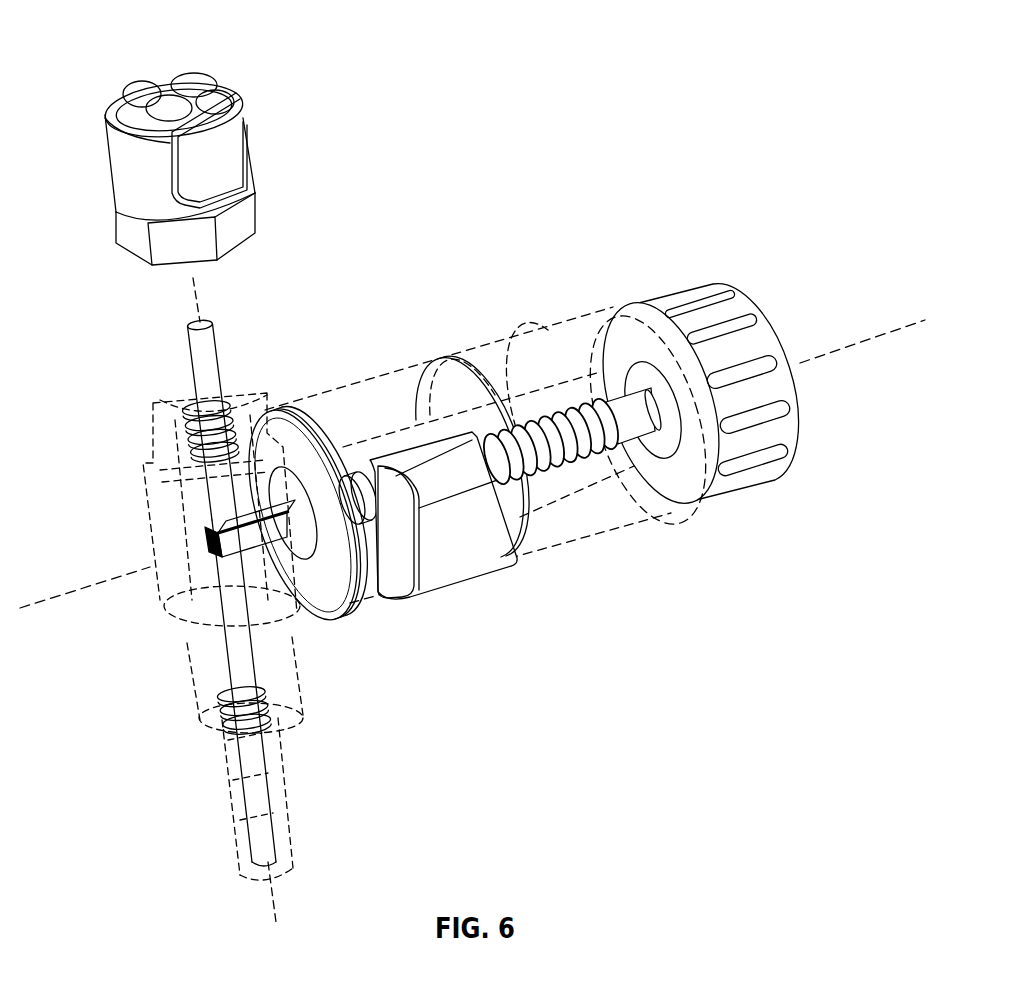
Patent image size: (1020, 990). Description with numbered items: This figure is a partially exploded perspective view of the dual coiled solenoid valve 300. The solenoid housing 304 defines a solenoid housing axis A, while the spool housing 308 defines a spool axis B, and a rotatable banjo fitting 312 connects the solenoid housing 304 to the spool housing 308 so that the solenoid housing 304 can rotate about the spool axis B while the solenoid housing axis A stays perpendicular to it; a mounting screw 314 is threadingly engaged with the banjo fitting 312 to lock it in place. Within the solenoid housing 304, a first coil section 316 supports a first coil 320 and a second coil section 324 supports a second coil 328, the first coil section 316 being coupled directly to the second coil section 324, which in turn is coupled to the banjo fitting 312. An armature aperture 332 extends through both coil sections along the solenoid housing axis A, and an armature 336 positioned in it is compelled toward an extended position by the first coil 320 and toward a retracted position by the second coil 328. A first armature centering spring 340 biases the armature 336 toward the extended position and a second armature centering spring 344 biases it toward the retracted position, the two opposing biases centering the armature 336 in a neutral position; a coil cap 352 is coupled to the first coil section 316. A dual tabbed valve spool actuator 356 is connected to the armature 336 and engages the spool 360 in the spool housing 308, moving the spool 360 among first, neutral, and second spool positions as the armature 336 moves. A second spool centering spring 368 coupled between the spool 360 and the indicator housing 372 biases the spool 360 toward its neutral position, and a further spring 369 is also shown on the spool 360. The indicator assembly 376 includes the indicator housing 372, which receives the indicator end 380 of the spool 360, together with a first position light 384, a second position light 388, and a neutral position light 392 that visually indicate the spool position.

The duel coiled solenoid valve 300 is at (480, 203).
The solenoid housing 304 is at (525, 303).
The spool housing 308 is at (233, 777).
The banjo fitting 312 is at (165, 597).
The mounting screw 314 is at (157, 460).
The first coil section 316 is at (583, 333).
The first coil 320 is at (520, 353).
The second coil section 324 is at (380, 382).
The second coil 328 is at (453, 557).
The armature aperture 332 is at (350, 598).
The armature 336 is at (322, 560).
The first armature centering spring 340 is at (590, 460).
The second armature centering spring 344 is at (308, 503).
The coil cap 352 is at (748, 312).
The dual tabbed valve spool actuator 356 is at (207, 533).
The spool 360 is at (247, 813).
The second spool centering spring 368 is at (187, 406).
The lower seal rings 369 is at (223, 717).
The indicator housing 372 is at (243, 213).
The indicator assembly 376 is at (215, 148).
The indicator end 380 is at (200, 342).
The first position light 384 is at (170, 93).
The second position light 388 is at (200, 80).
The neutral position light 392 is at (142, 86).
The solenoid housing axis A is at (887, 331).
The spool axis B is at (272, 902).